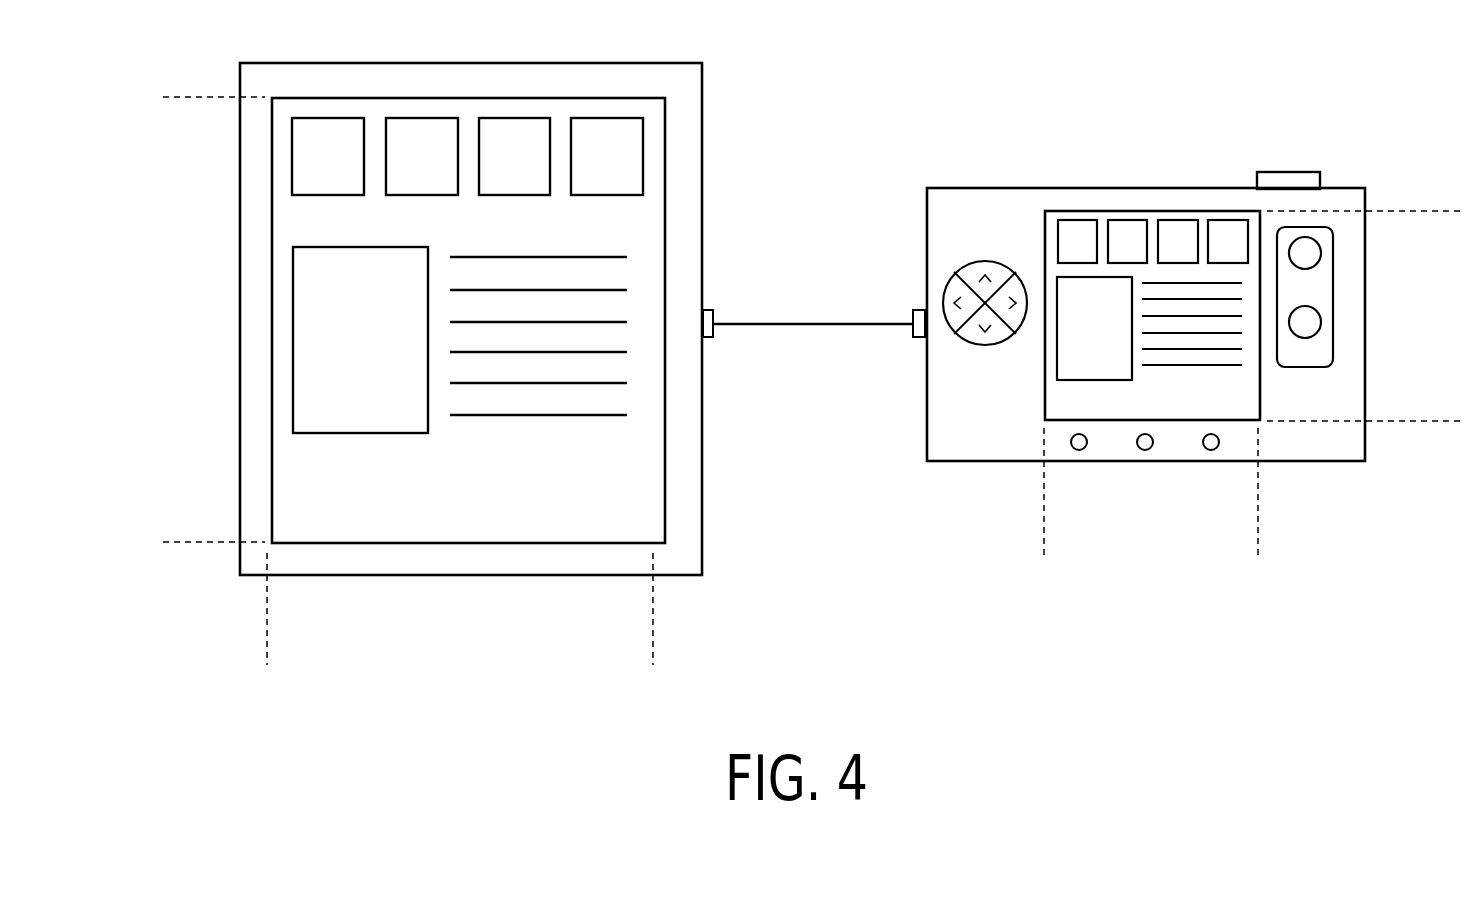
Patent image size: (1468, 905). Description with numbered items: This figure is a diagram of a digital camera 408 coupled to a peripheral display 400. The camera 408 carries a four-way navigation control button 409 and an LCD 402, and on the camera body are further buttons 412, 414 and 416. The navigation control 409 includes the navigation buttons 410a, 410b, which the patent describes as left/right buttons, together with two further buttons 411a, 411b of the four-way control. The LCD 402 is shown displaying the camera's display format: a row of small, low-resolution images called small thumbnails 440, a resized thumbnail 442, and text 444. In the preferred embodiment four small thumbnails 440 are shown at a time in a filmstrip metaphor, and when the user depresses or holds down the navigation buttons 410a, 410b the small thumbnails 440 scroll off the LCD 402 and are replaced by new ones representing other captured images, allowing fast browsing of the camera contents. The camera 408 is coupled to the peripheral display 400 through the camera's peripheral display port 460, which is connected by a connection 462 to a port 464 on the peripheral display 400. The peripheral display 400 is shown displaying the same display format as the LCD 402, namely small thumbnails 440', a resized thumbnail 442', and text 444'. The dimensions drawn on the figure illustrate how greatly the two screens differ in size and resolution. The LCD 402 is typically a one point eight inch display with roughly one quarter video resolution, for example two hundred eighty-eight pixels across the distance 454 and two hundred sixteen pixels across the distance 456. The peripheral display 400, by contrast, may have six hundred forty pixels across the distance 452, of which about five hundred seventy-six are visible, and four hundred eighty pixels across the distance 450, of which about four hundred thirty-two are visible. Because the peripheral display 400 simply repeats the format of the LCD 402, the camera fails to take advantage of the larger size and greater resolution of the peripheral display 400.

The peripheral display 400 is at (530, 63).
The LCD 402 is at (1193, 211).
The digital camera 408 is at (972, 189).
The four-way navigation control button 409 is at (957, 250).
The navigation button 410a is at (953, 280).
The navigation button 410b is at (1015, 325).
The right navigation key 411a is at (1002, 268).
The left navigation key 411b is at (970, 335).
The overlay button 412 is at (1321, 255).
The menus button 414 is at (1321, 322).
The function buttons 416 is at (1205, 448).
The small thumbnails 440 is at (1124, 206).
The small thumbnails 440' is at (463, 108).
The resized thumbnail 442 is at (1094, 328).
The resized thumbnail 442' is at (360, 340).
The text 444 is at (1194, 345).
The text 444' is at (538, 361).
The distance 450 is at (189, 97).
The distance 452 is at (653, 648).
The distance 454 is at (1258, 538).
The distance 456 is at (1440, 211).
The peripheral display port 460 is at (918, 337).
The connection 462 is at (798, 324).
The port 464 is at (707, 337).